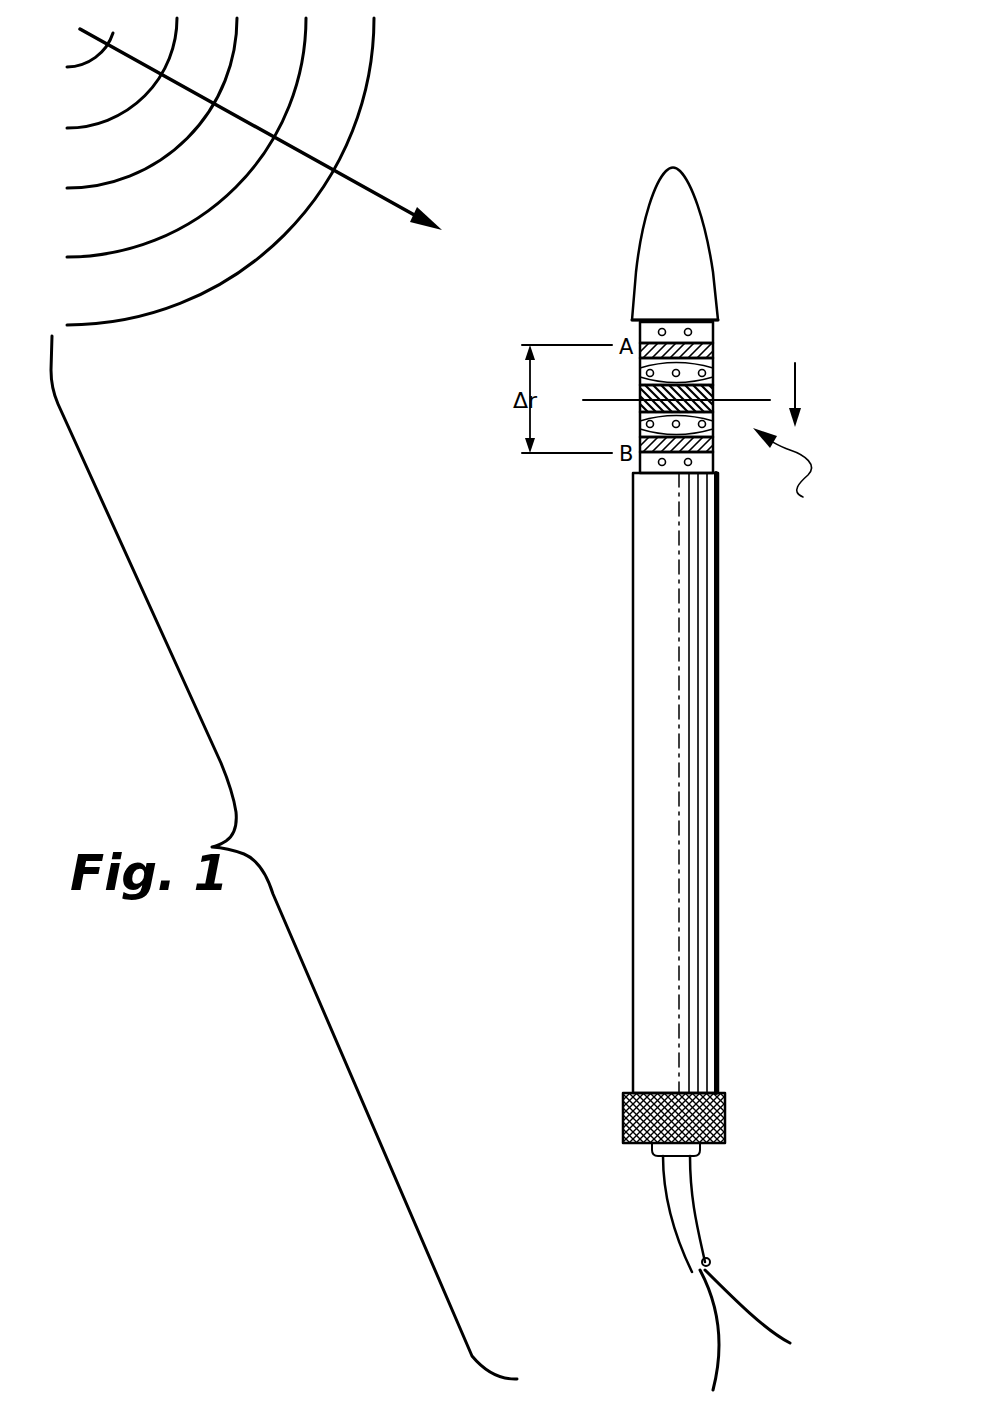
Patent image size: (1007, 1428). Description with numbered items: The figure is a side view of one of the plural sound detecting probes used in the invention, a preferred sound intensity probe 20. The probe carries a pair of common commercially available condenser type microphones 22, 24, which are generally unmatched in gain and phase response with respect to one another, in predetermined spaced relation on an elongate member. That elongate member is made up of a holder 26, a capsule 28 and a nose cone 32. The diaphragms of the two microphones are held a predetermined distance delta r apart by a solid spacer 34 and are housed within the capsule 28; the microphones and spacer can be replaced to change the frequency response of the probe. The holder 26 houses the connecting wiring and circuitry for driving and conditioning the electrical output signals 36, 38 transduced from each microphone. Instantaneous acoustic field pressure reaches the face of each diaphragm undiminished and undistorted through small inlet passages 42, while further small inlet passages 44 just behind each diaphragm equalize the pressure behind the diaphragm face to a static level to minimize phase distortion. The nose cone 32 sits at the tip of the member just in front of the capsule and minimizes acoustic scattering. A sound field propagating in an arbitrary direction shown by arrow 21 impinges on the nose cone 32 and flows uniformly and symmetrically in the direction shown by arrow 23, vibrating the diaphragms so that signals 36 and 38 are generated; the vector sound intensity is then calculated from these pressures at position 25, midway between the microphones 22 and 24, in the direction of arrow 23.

The sound intensity probe 20 is at (470, 878).
The arrow indicating propagation direction of sound field 21 is at (347, 173).
The condenser type microphone (A) 22 is at (714, 350).
The arrow indicating direction of uniform symmetric flow 23 is at (795, 377).
The condenser type microphone (B) 24 is at (714, 452).
The position midway between the microphones 25 is at (714, 400).
The holder 26 is at (738, 772).
The capsule 28 is at (788, 482).
The nose cone 32 is at (718, 210).
The solid spacer 34 is at (640, 387).
The electrical output signal 36 is at (717, 1327).
The electrical output signal 38 is at (767, 1327).
The small inlet passages 42 is at (640, 419).
The small inlet passages 44 is at (644, 330).